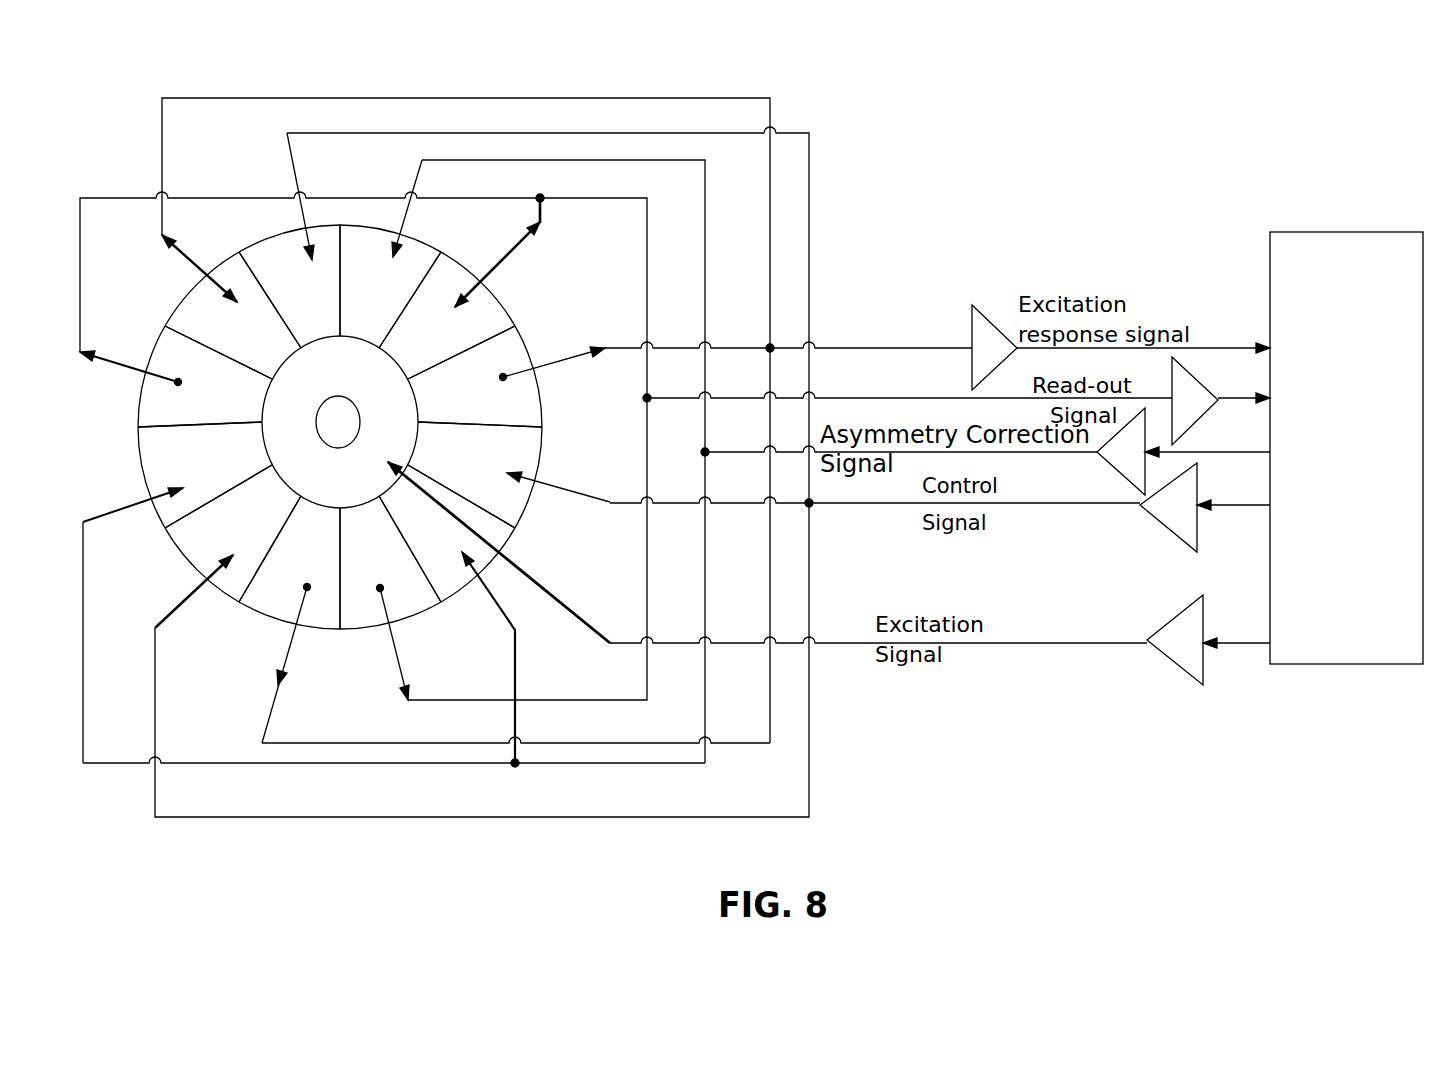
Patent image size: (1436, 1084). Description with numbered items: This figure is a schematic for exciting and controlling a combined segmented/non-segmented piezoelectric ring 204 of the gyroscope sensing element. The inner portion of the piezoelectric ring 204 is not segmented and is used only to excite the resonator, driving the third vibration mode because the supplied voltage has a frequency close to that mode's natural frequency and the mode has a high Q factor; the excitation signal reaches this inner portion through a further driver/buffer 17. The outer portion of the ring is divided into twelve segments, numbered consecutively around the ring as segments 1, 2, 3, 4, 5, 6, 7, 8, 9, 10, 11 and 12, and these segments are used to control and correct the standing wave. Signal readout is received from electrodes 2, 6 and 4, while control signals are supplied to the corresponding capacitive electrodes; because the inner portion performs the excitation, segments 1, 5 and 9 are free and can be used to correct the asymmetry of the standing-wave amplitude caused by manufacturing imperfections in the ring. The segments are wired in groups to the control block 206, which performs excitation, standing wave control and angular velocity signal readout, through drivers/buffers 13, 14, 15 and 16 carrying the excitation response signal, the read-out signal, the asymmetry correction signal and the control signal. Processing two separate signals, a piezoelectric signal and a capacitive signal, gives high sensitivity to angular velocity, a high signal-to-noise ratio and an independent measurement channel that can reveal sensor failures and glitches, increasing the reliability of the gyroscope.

The segment 1 is at (390, 254).
The electrode 2 is at (461, 286).
The electrode segment 3 is at (506, 376).
The electrode 4 is at (509, 475).
The segment 5 is at (449, 616).
The electrode 6 is at (390, 598).
The electrode segment 7 is at (289, 619).
The electrode segment 8 is at (228, 546).
The segment 9 is at (177, 475).
The electrode segment 10 is at (176, 376).
The electrode segment 11 is at (231, 307).
The electrode segment 12 is at (289, 240).
The driver/buffer 13 is at (994, 347).
The driver/buffer 14 is at (1195, 401).
The driver/buffer 15 is at (1121, 451).
The driver/buffer 16 is at (1168, 507).
The excitation signal amplifier 17 is at (1175, 640).
The piezoelectric ring 204 is at (536, 334).
The control block 206 is at (1322, 230).